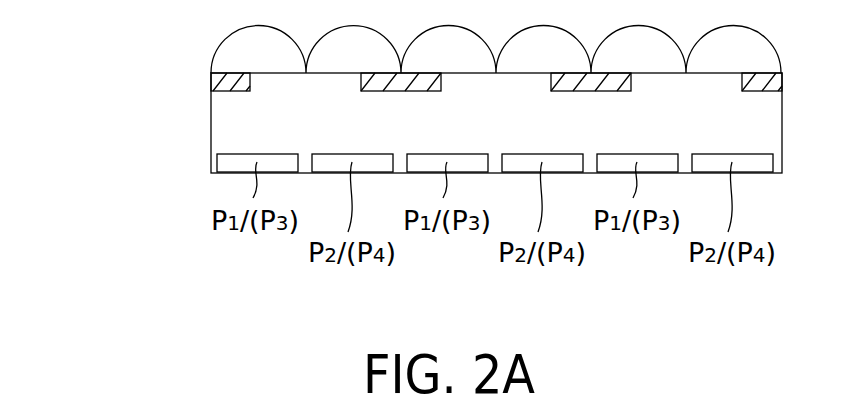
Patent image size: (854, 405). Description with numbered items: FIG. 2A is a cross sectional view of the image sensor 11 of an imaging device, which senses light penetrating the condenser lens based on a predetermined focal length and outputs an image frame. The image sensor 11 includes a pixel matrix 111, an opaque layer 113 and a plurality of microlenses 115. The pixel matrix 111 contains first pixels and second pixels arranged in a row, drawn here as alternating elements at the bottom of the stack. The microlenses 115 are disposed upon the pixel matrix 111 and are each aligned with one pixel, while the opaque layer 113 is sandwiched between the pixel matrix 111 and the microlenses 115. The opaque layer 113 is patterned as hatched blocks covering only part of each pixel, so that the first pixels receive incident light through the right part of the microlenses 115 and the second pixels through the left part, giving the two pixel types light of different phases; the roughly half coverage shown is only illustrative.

The image sensor 11 is at (100, 17).
The pixel matrix 111 is at (222, 160).
The opaque layer 113 is at (216, 88).
The microlenses 115 is at (221, 43).